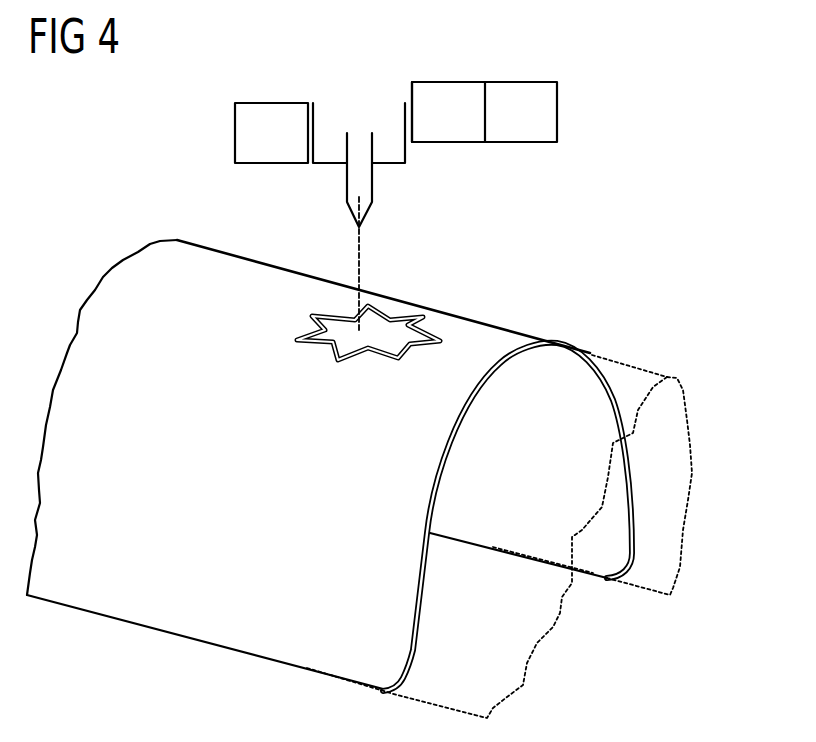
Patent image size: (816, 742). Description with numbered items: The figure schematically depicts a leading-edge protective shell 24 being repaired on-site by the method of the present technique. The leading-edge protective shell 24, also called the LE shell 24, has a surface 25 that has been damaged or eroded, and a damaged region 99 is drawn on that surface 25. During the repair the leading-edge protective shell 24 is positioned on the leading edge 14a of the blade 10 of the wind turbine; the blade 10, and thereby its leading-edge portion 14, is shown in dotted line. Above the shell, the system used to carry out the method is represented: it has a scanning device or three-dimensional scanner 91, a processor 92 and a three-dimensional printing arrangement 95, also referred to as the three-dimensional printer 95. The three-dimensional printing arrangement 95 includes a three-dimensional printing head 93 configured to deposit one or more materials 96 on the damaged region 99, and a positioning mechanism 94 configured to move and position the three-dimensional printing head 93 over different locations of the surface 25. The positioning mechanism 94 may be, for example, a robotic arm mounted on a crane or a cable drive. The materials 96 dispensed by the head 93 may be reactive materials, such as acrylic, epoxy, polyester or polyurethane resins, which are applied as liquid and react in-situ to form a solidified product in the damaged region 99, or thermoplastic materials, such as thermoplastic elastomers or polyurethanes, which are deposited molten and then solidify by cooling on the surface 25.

The blade 10 is at (568, 642).
The component 14 is at (690, 420).
The leading edge 14a is at (633, 373).
The leading-edge protective shell 24 is at (224, 268).
The surface 25 is at (258, 438).
The 3D scanner 91 is at (557, 110).
The processor 92 is at (447, 82).
The 3D printing head 93 is at (373, 183).
The positioning mechanism 94 is at (235, 135).
The 3D printing arrangement 95 is at (305, 90).
The materials 96 is at (358, 253).
The damaged region 99 is at (393, 332).